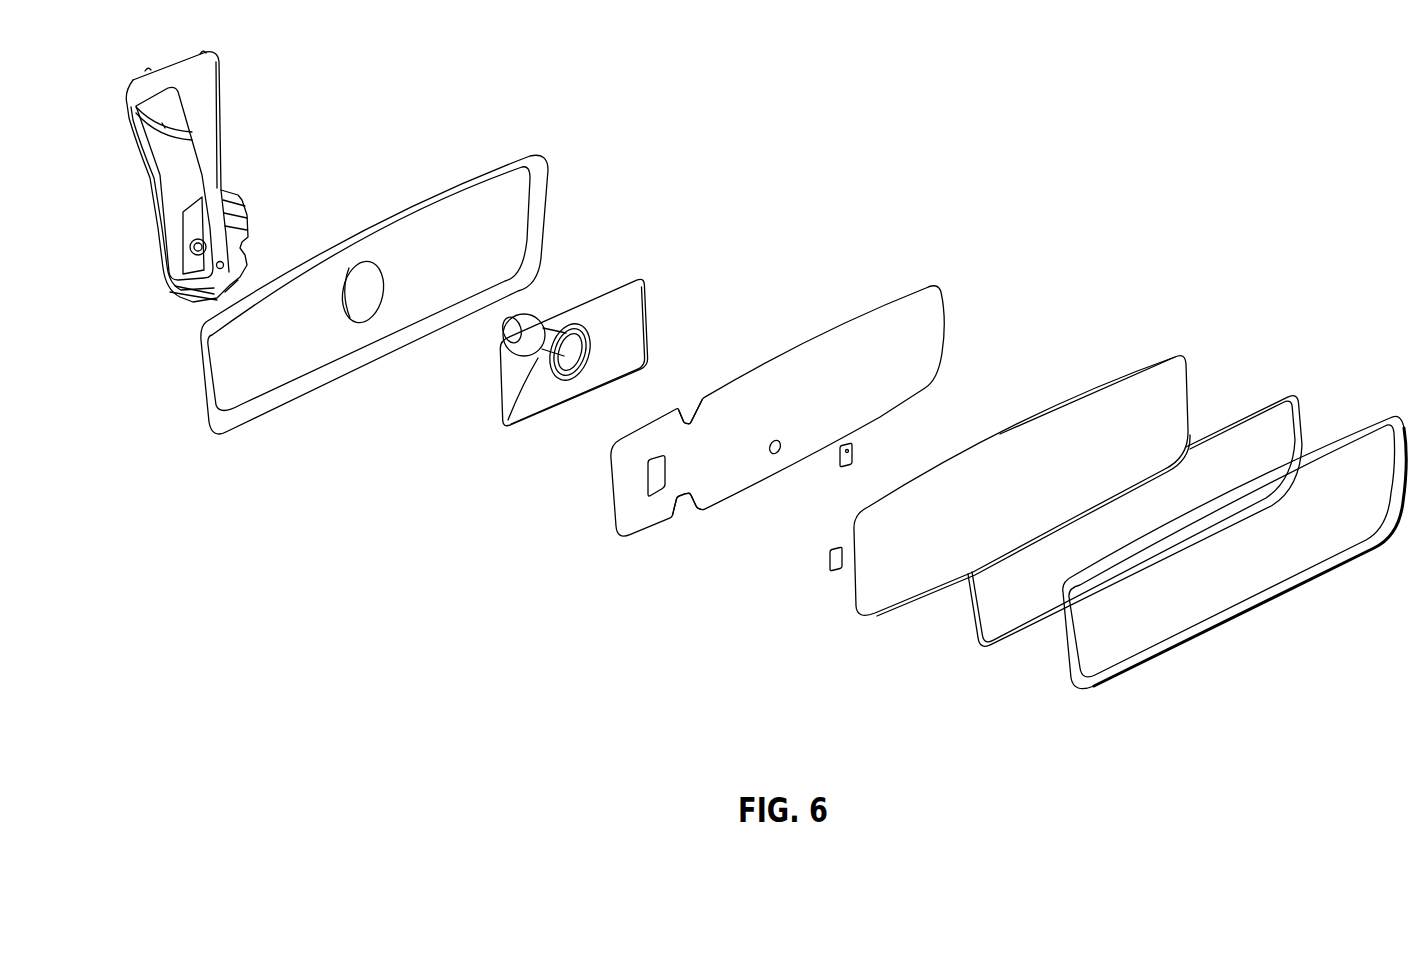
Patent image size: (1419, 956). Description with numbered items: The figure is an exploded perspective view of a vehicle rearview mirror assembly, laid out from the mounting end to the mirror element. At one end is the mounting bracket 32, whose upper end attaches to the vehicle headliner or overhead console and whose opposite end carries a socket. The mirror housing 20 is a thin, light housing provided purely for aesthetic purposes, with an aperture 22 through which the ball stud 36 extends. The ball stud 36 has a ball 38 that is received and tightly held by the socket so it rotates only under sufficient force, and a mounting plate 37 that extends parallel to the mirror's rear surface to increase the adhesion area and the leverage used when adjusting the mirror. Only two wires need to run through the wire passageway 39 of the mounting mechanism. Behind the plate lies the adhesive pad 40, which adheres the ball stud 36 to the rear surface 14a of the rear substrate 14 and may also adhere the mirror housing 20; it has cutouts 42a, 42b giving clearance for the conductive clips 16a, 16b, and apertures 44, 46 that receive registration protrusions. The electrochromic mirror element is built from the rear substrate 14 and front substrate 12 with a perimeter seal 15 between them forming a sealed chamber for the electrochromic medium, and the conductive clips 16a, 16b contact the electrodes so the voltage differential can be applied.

The front substrate 12 is at (1365, 430).
The rear substrate 14 is at (1155, 375).
The rear surface 14a is at (1072, 420).
The perimeter seal 15 is at (1270, 395).
The conductive clip 16a is at (840, 455).
The conductive clip 16b is at (830, 560).
The mirror housing 20 is at (465, 207).
The aperture 22 is at (357, 278).
The mounting bracket 32 is at (210, 130).
The ball stud 36 is at (523, 403).
The mounting plate 37 is at (615, 302).
The ball 38 is at (532, 325).
The wire passageway 39 is at (505, 330).
The adhesive pad 40 is at (852, 335).
The cutout 42a is at (688, 417).
The cutout 42b is at (683, 510).
The aperture 44 is at (652, 477).
The aperture 46 is at (770, 450).